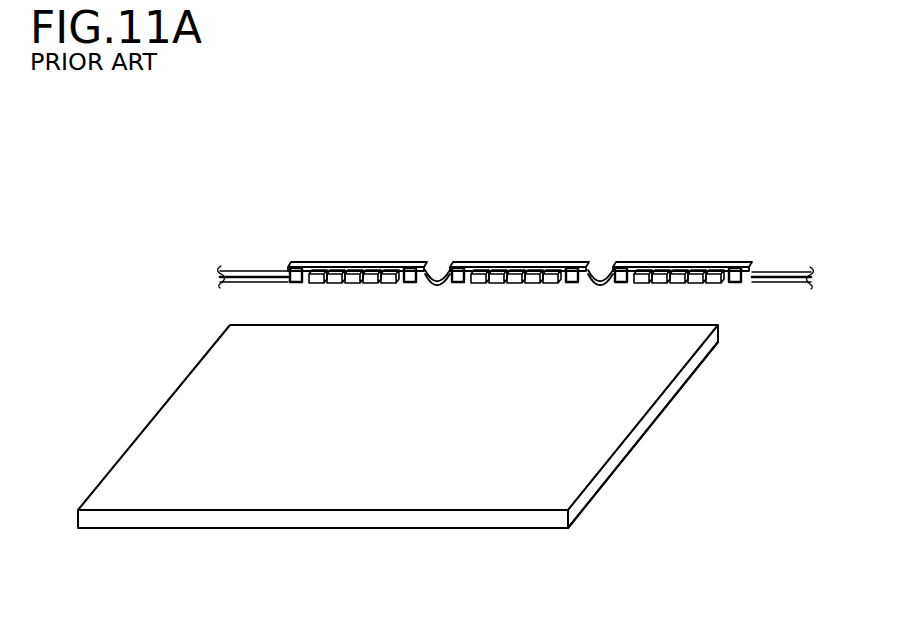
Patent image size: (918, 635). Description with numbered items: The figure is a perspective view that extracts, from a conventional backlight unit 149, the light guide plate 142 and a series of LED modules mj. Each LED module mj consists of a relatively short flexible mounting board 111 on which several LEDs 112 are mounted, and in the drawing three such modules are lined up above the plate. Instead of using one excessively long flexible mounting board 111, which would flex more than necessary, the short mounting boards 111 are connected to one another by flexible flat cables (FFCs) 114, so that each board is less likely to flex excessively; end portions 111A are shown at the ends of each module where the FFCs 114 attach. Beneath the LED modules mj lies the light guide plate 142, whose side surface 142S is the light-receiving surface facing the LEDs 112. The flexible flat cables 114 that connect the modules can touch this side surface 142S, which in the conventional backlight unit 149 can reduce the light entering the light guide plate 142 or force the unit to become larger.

The backlight unit 149 is at (247, 225).
The mounting board 111 is at (314, 262).
The end electrode 111A is at (406, 267).
The LED 112 is at (515, 303).
The flexible flat cable (FFC) 114 is at (250, 283).
The light guide plate 142 is at (570, 529).
The side surface (light-receiving surface) 142S is at (703, 348).
The LED module mj is at (520, 202).